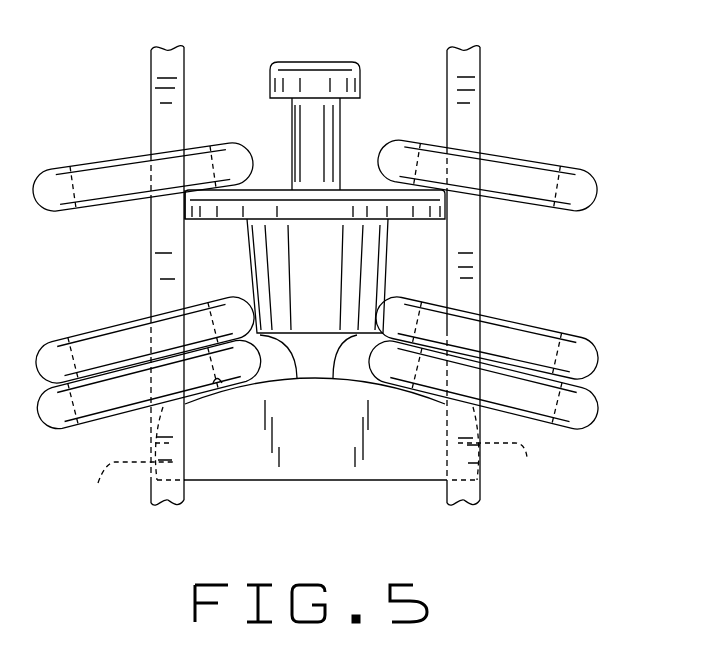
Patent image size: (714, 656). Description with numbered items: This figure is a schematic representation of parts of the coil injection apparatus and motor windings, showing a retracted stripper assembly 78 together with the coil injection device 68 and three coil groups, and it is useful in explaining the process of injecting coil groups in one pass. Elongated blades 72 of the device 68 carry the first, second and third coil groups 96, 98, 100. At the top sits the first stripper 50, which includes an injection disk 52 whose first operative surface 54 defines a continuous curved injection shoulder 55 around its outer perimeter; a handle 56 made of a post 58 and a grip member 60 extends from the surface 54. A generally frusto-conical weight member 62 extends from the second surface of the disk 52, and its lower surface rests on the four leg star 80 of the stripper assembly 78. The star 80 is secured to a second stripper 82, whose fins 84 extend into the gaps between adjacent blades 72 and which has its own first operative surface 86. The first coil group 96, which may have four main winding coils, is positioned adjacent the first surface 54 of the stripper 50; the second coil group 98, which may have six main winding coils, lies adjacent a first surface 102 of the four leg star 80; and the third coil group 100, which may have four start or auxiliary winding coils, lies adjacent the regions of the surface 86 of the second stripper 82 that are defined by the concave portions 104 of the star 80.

The stripper 50 is at (445, 223).
The injection disk 52 is at (183, 207).
The first operative surface 54 is at (353, 186).
The continuous curved injection shoulder 55 is at (174, 222).
The handle 56 is at (327, 60).
The post 58 is at (290, 122).
The grip member 60 is at (290, 66).
The weight member 62 is at (346, 259).
The coil injection device 68 is at (484, 277).
The elongated blades 72 is at (165, 67).
The stripper assembly 78 is at (247, 242).
The four leg star 80 is at (404, 330).
The second stripper 82 is at (371, 463).
The fins 84 is at (311, 461).
The first operative surface 86 is at (220, 375).
The first coil group 96 is at (134, 154).
The second coil group 98 is at (88, 338).
The third coil group 100 is at (108, 418).
The first surface 102 is at (185, 297).
The concave portions 104 is at (283, 367).